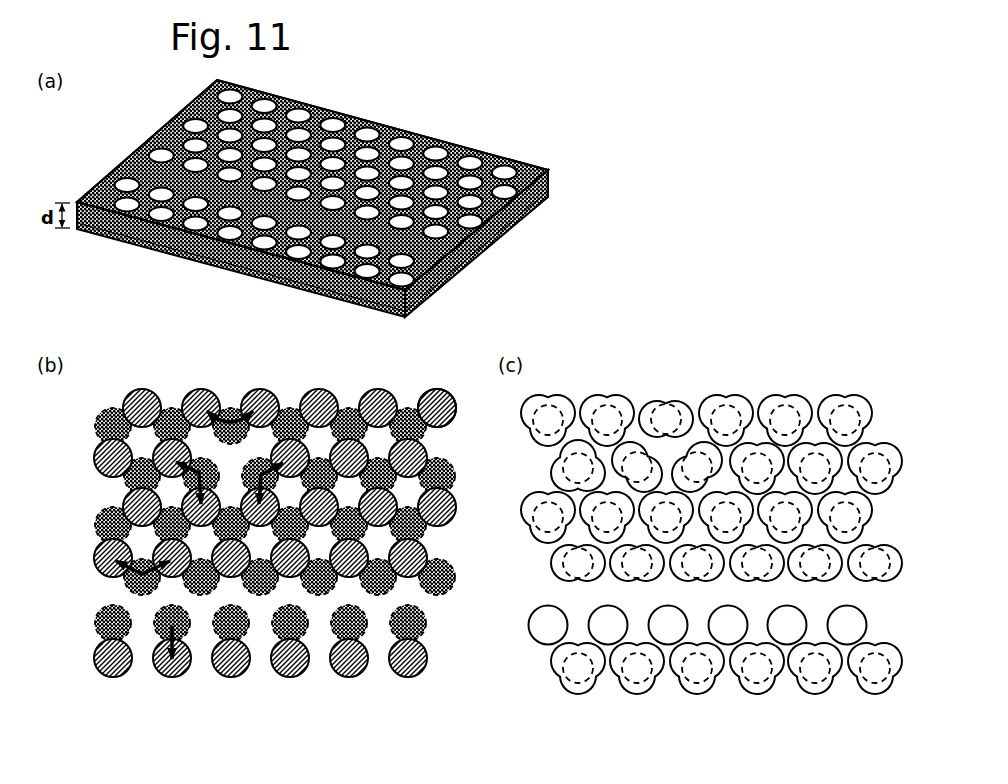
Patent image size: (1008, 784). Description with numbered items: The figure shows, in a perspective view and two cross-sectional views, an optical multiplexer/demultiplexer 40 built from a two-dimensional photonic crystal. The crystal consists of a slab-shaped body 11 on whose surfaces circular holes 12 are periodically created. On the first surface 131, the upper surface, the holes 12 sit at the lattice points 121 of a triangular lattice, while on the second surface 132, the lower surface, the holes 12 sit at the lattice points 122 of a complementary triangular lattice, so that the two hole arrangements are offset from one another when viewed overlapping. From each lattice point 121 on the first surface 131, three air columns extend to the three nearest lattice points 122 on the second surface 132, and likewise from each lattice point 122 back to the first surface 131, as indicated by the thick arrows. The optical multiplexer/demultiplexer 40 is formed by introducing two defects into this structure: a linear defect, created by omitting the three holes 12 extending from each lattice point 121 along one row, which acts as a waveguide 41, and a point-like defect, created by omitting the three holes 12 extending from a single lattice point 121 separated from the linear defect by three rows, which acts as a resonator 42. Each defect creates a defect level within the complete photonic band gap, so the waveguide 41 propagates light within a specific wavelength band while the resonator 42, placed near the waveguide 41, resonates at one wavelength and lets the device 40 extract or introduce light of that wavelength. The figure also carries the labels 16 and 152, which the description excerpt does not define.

The body 11 is at (550, 176).
The circular holes 12 is at (400, 140).
The light emitting element 16 is at (785, 413).
The optical multiplexer/demultiplexer 40 is at (524, 310).
The waveguide 41 is at (145, 170).
The resonator 42 is at (298, 150).
The lattice points 121 is at (437, 400).
The lattice points 122 is at (353, 423).
The first surface 131 is at (525, 160).
The second surface 132 is at (234, 278).
The lower layer 152 is at (527, 212).